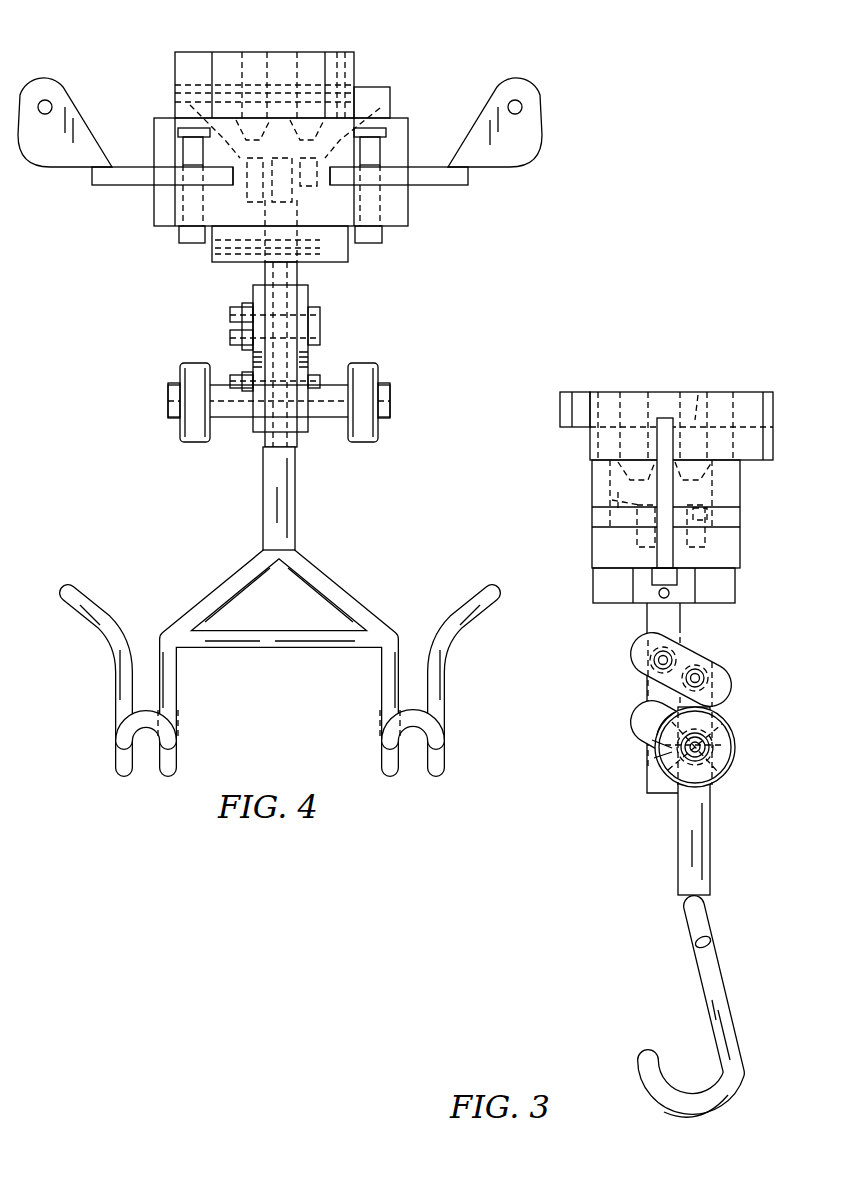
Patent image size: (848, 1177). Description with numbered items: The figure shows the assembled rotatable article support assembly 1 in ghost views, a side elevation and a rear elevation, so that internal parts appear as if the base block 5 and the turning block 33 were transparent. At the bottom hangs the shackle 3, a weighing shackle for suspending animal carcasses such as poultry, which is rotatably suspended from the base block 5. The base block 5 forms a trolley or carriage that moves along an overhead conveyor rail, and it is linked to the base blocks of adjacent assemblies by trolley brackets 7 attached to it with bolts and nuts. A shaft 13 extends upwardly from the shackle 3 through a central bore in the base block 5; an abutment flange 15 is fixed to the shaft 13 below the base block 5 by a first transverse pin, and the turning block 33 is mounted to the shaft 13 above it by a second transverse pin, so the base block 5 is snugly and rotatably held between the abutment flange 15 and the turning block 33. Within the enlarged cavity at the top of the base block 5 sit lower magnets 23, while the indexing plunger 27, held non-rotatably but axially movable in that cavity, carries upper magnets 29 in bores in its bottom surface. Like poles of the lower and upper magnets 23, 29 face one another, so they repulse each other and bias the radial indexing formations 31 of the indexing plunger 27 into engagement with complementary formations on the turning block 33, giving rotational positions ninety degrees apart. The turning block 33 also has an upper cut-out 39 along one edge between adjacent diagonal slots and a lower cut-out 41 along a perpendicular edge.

In FIG. 4, the rotatable article support assembly 1 is at (503, 248).
In FIG. 3, the rotatable article support assembly 1 is at (740, 330).
In FIG. 4, the shackle 3 is at (297, 494).
In FIG. 3, the shackle 3 is at (712, 835).
In FIG. 4, the base block 5 is at (160, 200).
In FIG. 3, the base block 5 is at (715, 555).
In FIG. 4, the trolley brackets 7 is at (542, 106).
In FIG. 4, the shaft 13 is at (297, 263).
In FIG. 3, the shaft 13 is at (682, 622).
In FIG. 4, the abutment flange 15 is at (230, 234).
In FIG. 3, the abutment flange 15 is at (720, 585).
In FIG. 4, the lower magnets 23 is at (260, 190).
In FIG. 3, the lower magnets 23 is at (640, 530).
In FIG. 4, the indexing plunger 27 is at (190, 105).
In FIG. 3, the indexing plunger 27 is at (612, 500).
In FIG. 4, the upper magnets 29 is at (380, 108).
In FIG. 3, the upper magnets 29 is at (712, 518).
In FIG. 4, the radial indexing formations 31 is at (322, 56).
In FIG. 3, the radial indexing formations 31 is at (700, 392).
In FIG. 4, the turning block 33 is at (197, 80).
In FIG. 3, the turning block 33 is at (635, 393).
In FIG. 4, the upper cut-out 39 is at (368, 87).
In FIG. 3, the lower cut-out 41 is at (590, 440).